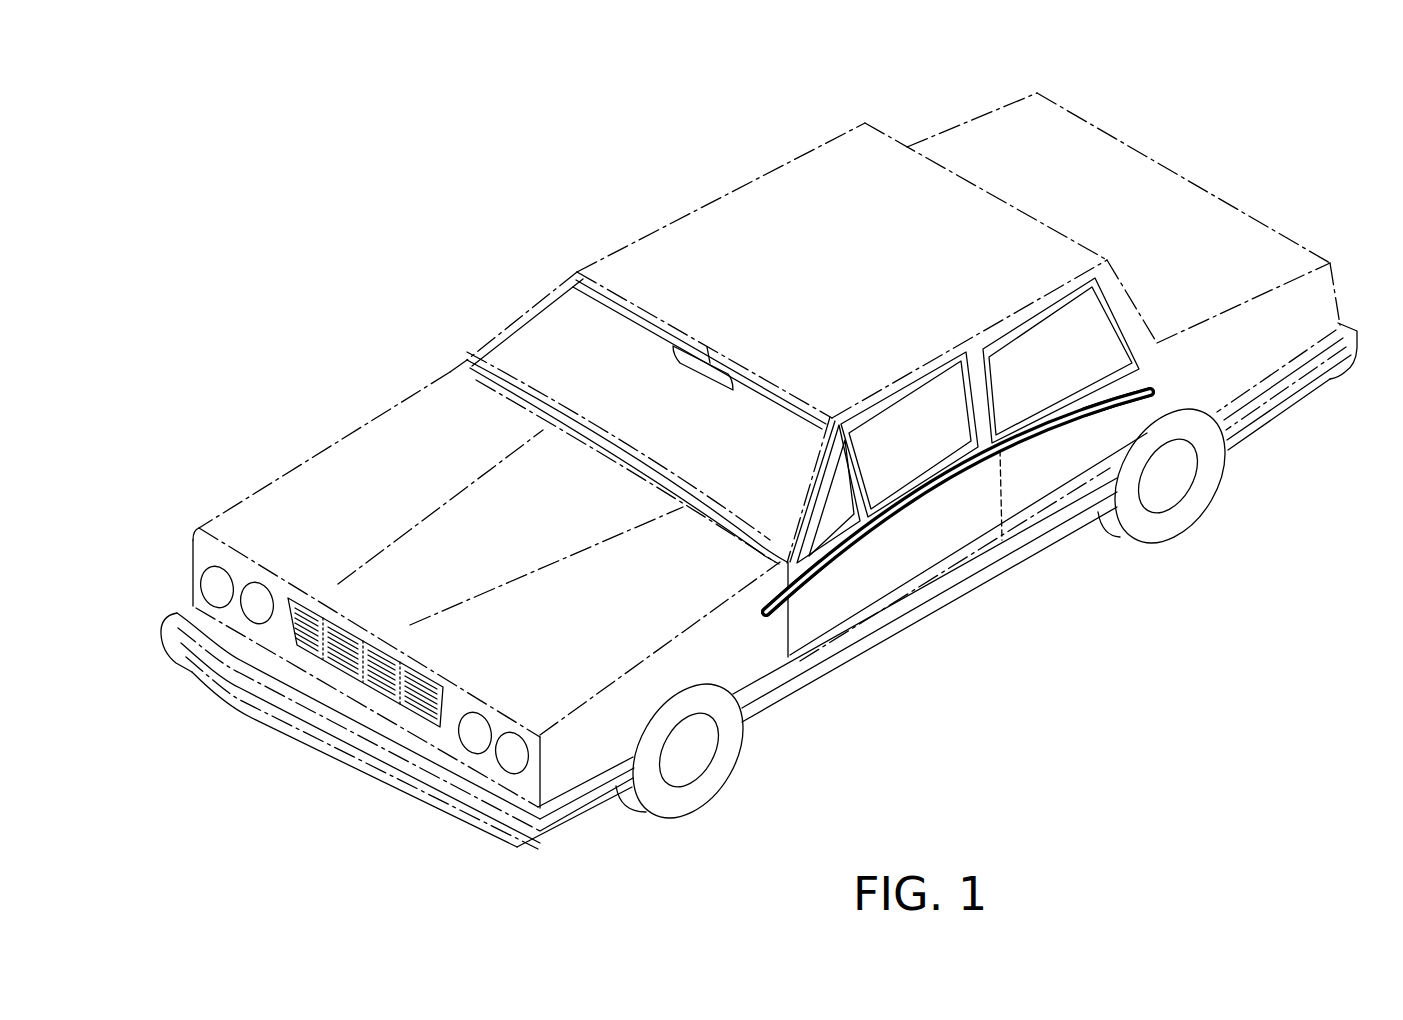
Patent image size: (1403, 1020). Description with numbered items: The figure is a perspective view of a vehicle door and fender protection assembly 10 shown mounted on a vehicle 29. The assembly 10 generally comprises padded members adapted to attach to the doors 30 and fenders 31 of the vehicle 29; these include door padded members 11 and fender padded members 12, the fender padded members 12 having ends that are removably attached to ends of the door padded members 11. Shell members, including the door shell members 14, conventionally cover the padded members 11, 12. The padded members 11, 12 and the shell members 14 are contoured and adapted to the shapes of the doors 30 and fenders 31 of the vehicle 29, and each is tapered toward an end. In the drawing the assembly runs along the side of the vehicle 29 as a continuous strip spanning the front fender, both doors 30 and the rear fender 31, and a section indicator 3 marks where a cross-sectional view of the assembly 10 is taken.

The vehicle door and fender protection assembly 10 is at (759, 483).
The door padded member 11 is at (892, 517).
The fender padded member 12 is at (777, 607).
The door shell member 14 is at (783, 610).
The vehicle 29 is at (365, 441).
The door 30 is at (812, 630).
The fender 31 is at (723, 642).
The section line 3- 3 is at (952, 449).